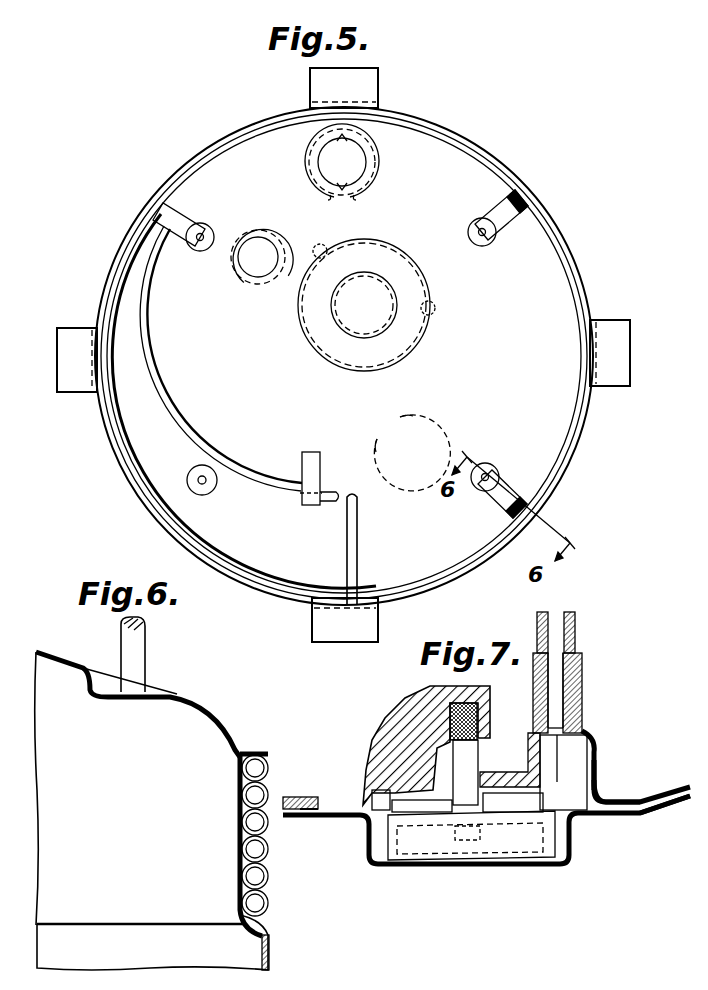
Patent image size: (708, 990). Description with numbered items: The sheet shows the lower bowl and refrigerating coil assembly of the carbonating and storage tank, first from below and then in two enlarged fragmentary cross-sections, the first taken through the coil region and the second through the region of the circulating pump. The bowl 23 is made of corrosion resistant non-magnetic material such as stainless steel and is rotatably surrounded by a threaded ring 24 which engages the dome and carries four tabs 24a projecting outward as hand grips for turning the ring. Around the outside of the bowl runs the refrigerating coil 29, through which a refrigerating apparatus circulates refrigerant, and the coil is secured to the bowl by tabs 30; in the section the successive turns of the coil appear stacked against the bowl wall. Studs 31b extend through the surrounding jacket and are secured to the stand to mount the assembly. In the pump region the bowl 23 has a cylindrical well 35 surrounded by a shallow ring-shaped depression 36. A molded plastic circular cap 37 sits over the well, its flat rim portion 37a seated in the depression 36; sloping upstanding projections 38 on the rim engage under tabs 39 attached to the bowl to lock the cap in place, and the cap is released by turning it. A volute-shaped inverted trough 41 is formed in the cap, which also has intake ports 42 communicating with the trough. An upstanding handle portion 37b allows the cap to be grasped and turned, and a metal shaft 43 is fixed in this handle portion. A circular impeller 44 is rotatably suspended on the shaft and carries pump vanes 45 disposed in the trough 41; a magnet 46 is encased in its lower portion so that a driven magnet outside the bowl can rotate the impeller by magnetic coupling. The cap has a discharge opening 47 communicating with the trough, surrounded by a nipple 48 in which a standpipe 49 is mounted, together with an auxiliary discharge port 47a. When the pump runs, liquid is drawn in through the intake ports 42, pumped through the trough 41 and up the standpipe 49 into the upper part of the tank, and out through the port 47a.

In FIG. 5, the bowl 23 is at (402, 508).
In FIG. 6, the bowl 23 is at (237, 810).
In FIG. 7, the bowl 23 is at (672, 800).
In FIG. 5, the threaded ring 24 is at (118, 287).
In FIG. 5, the tabs 24a is at (358, 88).
In FIG. 5, the refrigerating coil 29 is at (146, 477).
In FIG. 6, the refrigerating coil 29 is at (266, 897).
In FIG. 5, the tabs 30 is at (193, 220).
In FIG. 6, the tabs 30 is at (225, 734).
In FIG. 6, the studs 31b is at (135, 648).
In FIG. 7, the cylindrical well 35 is at (520, 867).
In FIG. 7, the ring-shaped depression 36 is at (590, 802).
In FIG. 7, the circular cap 37 is at (398, 728).
In FIG. 7, the flat rim portion 37a is at (606, 797).
In FIG. 7, the upstanding handle portion 37b is at (468, 758).
In FIG. 7, the sloping upstanding projections 38 is at (320, 806).
In FIG. 7, the tabs 39 is at (303, 800).
In FIG. 7, the volute-shaped inverted trough 41 is at (372, 797).
In FIG. 7, the intake ports 42 is at (520, 758).
In FIG. 7, the metal shaft 43 is at (494, 746).
In FIG. 7, the circular impeller 44 is at (413, 843).
In FIG. 7, the pump vanes 45 is at (371, 832).
In FIG. 7, the magnet 46 is at (440, 850).
In FIG. 7, the discharge opening 47 is at (528, 804).
In FIG. 7, the auxiliary discharge port 47a is at (598, 778).
In FIG. 7, the nipple 48 is at (598, 760).
In FIG. 7, the standpipe 49 is at (576, 641).